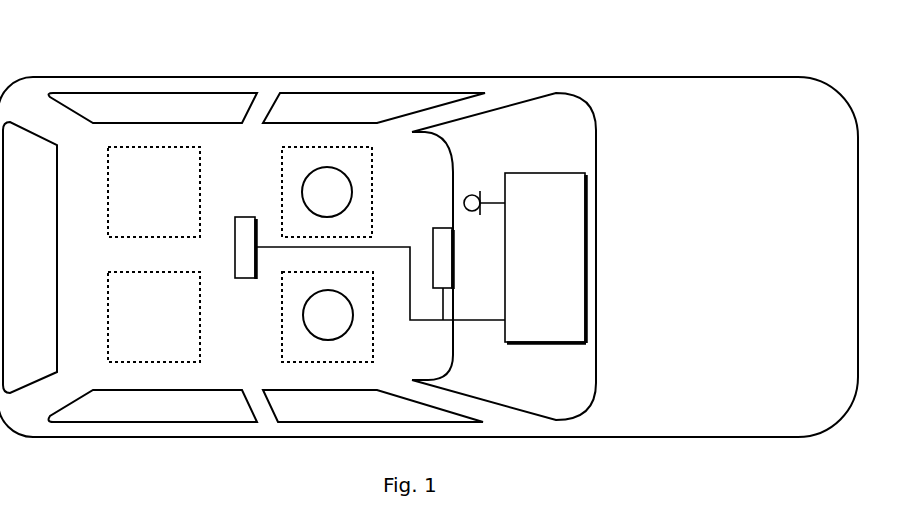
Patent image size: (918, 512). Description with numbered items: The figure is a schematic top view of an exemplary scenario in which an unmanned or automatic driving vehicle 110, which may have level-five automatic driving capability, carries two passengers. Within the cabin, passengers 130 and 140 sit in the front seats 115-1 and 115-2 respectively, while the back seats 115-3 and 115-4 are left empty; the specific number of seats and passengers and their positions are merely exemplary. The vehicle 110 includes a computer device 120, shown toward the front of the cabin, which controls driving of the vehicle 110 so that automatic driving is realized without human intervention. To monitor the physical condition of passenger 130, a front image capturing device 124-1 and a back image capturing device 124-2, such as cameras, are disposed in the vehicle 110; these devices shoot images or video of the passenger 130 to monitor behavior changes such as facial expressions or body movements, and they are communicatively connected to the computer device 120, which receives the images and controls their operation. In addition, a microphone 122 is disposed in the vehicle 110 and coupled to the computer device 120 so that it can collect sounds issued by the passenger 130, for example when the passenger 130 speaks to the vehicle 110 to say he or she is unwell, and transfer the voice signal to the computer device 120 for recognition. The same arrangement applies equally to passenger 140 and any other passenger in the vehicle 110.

The automatic driving vehicle 110 is at (714, 77).
The front seat 115-1 is at (372, 187).
The front seat 115-2 is at (317, 362).
The back seat 115-3 is at (200, 197).
The back seat 115-4 is at (200, 350).
The computer device 120 is at (522, 173).
The microphone 122 is at (473, 194).
The front image capturing device 124-1 is at (433, 237).
The back image capturing device 124-2 is at (235, 246).
The passenger 130 is at (311, 180).
The passenger 140 is at (312, 305).